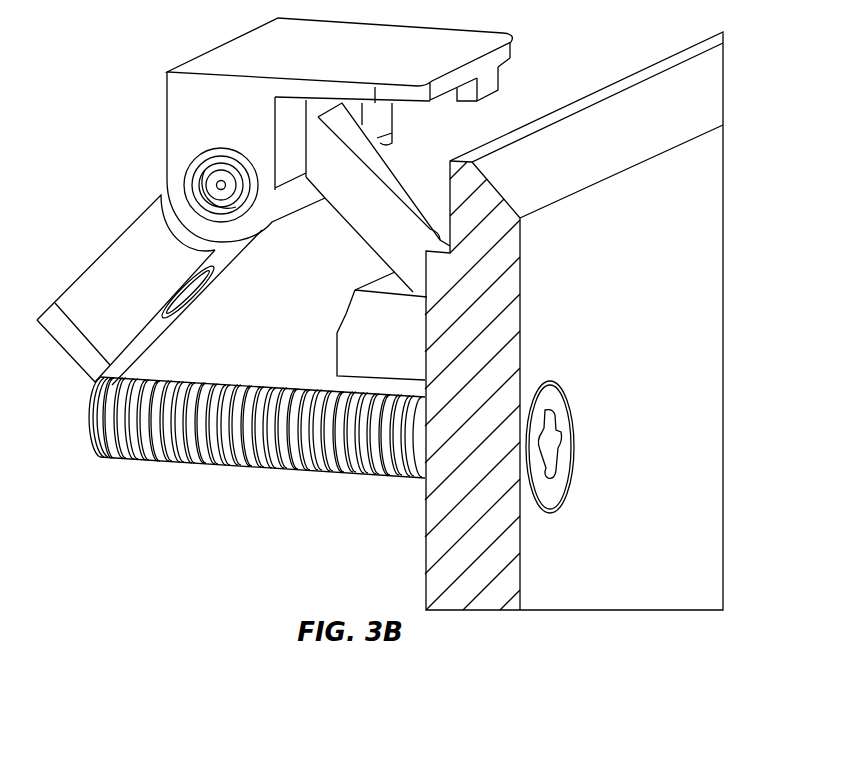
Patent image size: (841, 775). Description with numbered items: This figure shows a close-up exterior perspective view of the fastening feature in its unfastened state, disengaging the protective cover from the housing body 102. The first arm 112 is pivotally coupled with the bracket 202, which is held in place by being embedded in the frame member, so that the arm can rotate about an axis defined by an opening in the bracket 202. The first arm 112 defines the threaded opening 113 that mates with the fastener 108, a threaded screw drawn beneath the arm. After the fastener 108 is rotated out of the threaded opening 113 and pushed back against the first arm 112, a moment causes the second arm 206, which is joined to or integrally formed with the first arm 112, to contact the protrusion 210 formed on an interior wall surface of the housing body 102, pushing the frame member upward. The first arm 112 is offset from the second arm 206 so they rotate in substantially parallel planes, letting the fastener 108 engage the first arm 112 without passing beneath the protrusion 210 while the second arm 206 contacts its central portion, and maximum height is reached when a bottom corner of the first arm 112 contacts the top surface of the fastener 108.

The housing body 102 is at (462, 535).
The fastener 108 is at (150, 461).
The first arm 112 is at (102, 295).
The threaded opening 113 is at (199, 294).
The bracket 202 is at (204, 129).
The second arm 206 is at (363, 226).
The protrusion 210 is at (368, 347).